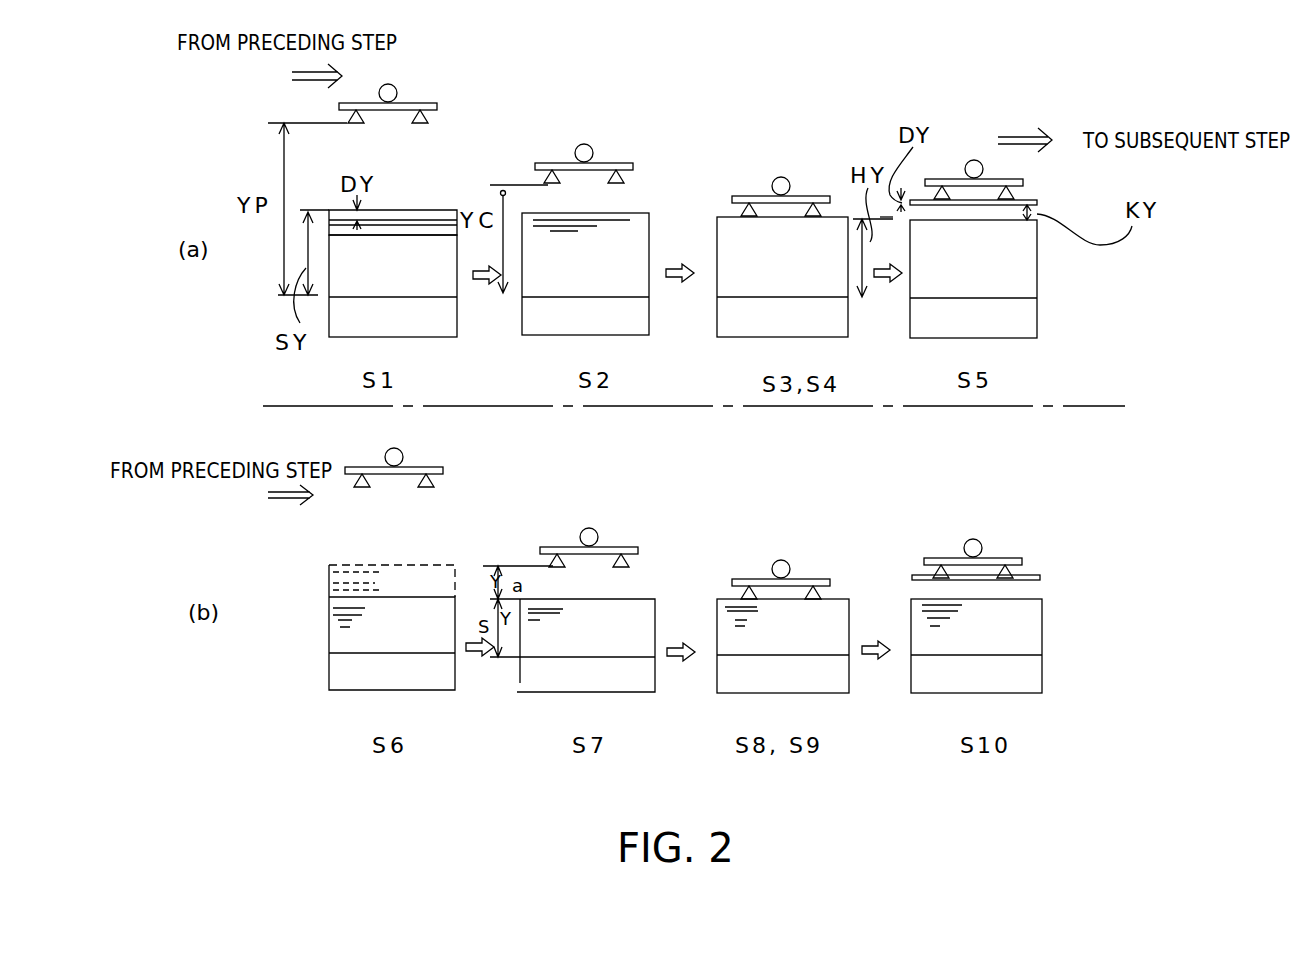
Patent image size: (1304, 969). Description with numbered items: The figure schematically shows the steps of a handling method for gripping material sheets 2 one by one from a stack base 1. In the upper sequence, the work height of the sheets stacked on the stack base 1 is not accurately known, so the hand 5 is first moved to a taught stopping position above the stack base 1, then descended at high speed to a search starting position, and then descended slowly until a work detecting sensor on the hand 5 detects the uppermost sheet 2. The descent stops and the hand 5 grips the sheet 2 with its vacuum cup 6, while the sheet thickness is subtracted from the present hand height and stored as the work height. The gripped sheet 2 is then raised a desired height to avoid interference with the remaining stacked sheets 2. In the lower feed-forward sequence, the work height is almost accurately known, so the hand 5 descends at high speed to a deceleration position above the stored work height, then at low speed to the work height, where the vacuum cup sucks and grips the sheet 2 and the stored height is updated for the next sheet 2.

In FIG. 2a, the stack base 1 is at (1023, 325).
In FIG. 2b, the stack base 1 is at (1030, 677).
In FIG. 2a, the material sheet 2 is at (430, 214).
In FIG. 2b, the material sheet 2 is at (1040, 578).
In FIG. 2a, the hand 5 is at (410, 106).
In FIG. 2b, the hand 5 is at (418, 470).
In FIG. 2a, the vacuum cup 6 is at (1023, 182).